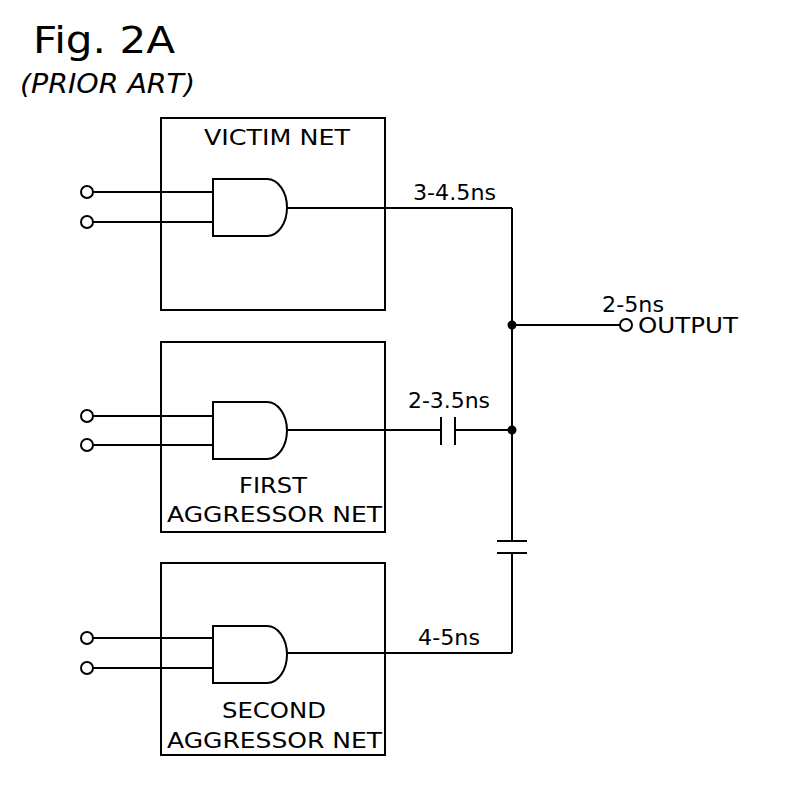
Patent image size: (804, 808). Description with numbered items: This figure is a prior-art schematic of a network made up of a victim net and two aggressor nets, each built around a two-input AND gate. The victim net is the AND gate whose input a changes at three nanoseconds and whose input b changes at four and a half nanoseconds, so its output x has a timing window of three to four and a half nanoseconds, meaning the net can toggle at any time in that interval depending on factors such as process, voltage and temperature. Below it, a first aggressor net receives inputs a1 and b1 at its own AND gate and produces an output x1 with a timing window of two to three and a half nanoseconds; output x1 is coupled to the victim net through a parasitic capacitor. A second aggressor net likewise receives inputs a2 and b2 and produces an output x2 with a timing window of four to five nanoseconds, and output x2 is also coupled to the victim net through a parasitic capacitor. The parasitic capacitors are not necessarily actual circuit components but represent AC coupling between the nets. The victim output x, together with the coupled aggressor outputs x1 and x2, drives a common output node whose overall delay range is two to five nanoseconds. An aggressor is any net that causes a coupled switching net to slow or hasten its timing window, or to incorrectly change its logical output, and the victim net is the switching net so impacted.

The input a is at (147, 180).
The input b is at (147, 237).
The output x is at (362, 207).
The first aggressor net input a1 is at (147, 403).
The first aggressor net input b1 is at (147, 459).
The first aggressor net output x1 is at (327, 429).
The second aggressor net input a2 is at (147, 625).
The second aggressor net input b2 is at (147, 682).
The second aggressor net output x2 is at (362, 651).